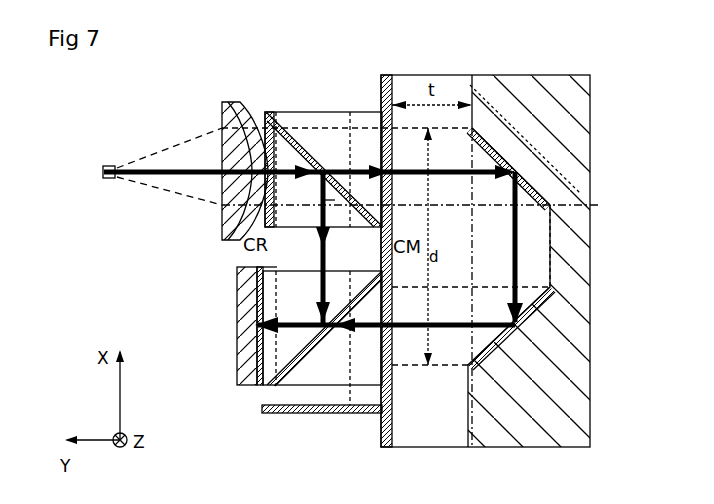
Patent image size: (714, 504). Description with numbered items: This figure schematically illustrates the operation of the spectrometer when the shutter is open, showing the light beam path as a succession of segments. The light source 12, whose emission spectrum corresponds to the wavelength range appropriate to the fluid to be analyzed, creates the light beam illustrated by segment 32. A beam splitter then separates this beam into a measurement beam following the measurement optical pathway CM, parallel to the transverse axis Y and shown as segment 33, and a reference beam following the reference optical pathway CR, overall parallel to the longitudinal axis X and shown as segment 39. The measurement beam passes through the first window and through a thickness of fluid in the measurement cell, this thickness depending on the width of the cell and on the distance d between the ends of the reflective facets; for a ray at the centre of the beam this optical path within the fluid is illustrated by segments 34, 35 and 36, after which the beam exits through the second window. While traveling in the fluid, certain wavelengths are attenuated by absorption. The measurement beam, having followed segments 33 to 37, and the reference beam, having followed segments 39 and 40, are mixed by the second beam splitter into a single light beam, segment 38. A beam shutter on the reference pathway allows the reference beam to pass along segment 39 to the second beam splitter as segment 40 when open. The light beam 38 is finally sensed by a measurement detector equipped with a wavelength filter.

The light source 12 is at (113, 168).
The light beam segment 32 is at (261, 162).
The measurement beam segment 33 is at (347, 167).
The measurement beam segment in measurement cell 34 is at (457, 170).
The measurement beam segment in measurement cell 35 is at (517, 234).
The measurement beam segment in measurement cell 36 is at (480, 326).
The measurement beam segment 37 is at (353, 331).
The single light beam 38 is at (290, 321).
The reference beam segment 39 is at (363, 166).
The reference beam segment 40 is at (317, 278).